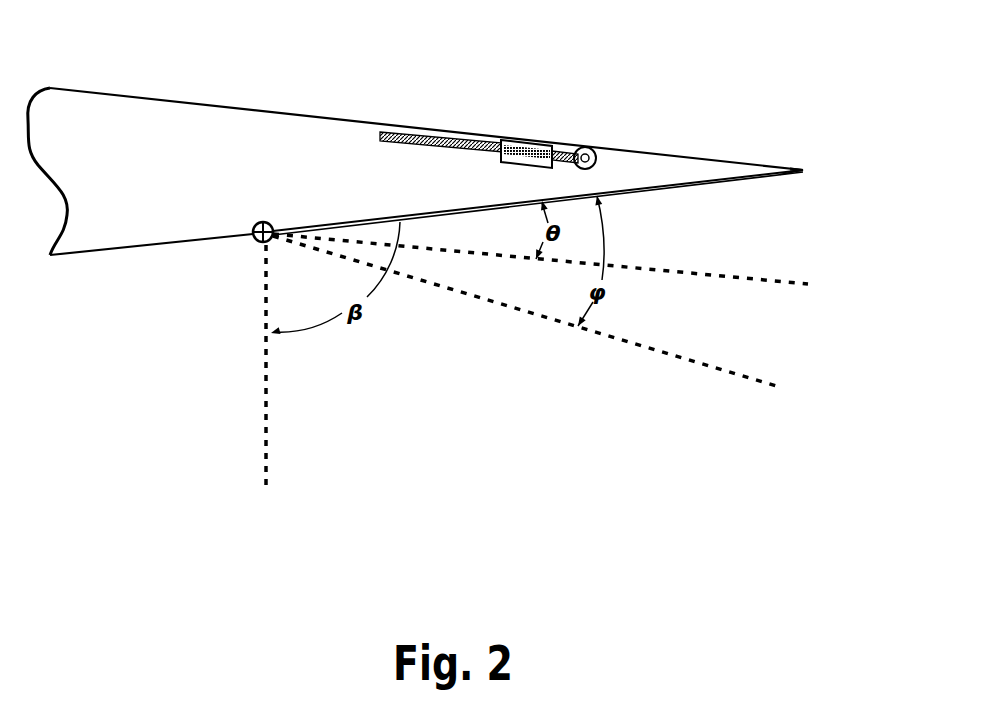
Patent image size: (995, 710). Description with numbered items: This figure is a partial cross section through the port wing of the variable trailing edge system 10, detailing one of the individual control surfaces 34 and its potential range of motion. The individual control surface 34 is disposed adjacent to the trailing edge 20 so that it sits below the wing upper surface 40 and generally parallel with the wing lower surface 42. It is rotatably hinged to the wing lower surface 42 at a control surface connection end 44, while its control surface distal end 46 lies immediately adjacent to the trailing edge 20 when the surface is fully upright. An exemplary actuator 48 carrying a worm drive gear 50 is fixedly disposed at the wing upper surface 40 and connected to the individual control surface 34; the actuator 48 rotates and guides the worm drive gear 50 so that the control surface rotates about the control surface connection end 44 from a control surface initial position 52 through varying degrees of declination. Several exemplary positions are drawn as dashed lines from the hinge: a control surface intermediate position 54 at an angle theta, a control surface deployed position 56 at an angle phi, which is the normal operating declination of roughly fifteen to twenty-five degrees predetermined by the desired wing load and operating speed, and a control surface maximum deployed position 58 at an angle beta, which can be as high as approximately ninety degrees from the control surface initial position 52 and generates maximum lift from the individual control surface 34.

The variable trailing edge system 10 is at (705, 82).
The trailing edge 20 is at (803, 170).
The individual control surface 34 is at (617, 198).
The wing upper surface 40 is at (237, 107).
The wing lower surface 42 is at (145, 245).
The control surface connection end 44 is at (255, 240).
The control surface distal end 46 is at (803, 170).
The actuator 48 is at (547, 137).
The worm drive gear 50 is at (428, 132).
The control surface initial position 52 is at (803, 170).
The control surface intermediate position 54 is at (795, 288).
The control surface deployed position 56 is at (767, 382).
The control surface maximum deployed position 58 is at (268, 457).